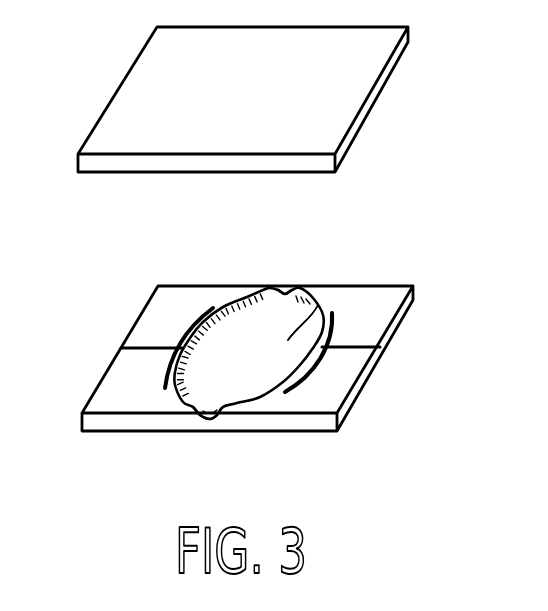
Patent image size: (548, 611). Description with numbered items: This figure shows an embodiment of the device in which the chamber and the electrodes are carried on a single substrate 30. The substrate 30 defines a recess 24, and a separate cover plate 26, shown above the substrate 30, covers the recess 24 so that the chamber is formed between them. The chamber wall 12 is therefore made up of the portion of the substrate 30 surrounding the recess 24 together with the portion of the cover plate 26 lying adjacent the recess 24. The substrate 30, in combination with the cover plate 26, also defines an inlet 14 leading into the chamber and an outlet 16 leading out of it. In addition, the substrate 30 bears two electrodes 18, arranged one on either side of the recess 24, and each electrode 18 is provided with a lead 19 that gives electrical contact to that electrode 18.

The chamber wall 12 is at (257, 398).
The inlet 14 is at (285, 288).
The outlet 16 is at (212, 418).
The electrode 18 is at (200, 316).
The lead 19 is at (140, 344).
The recess 24 is at (315, 308).
The cover plate 26 is at (382, 75).
The substrate 30 is at (363, 383).